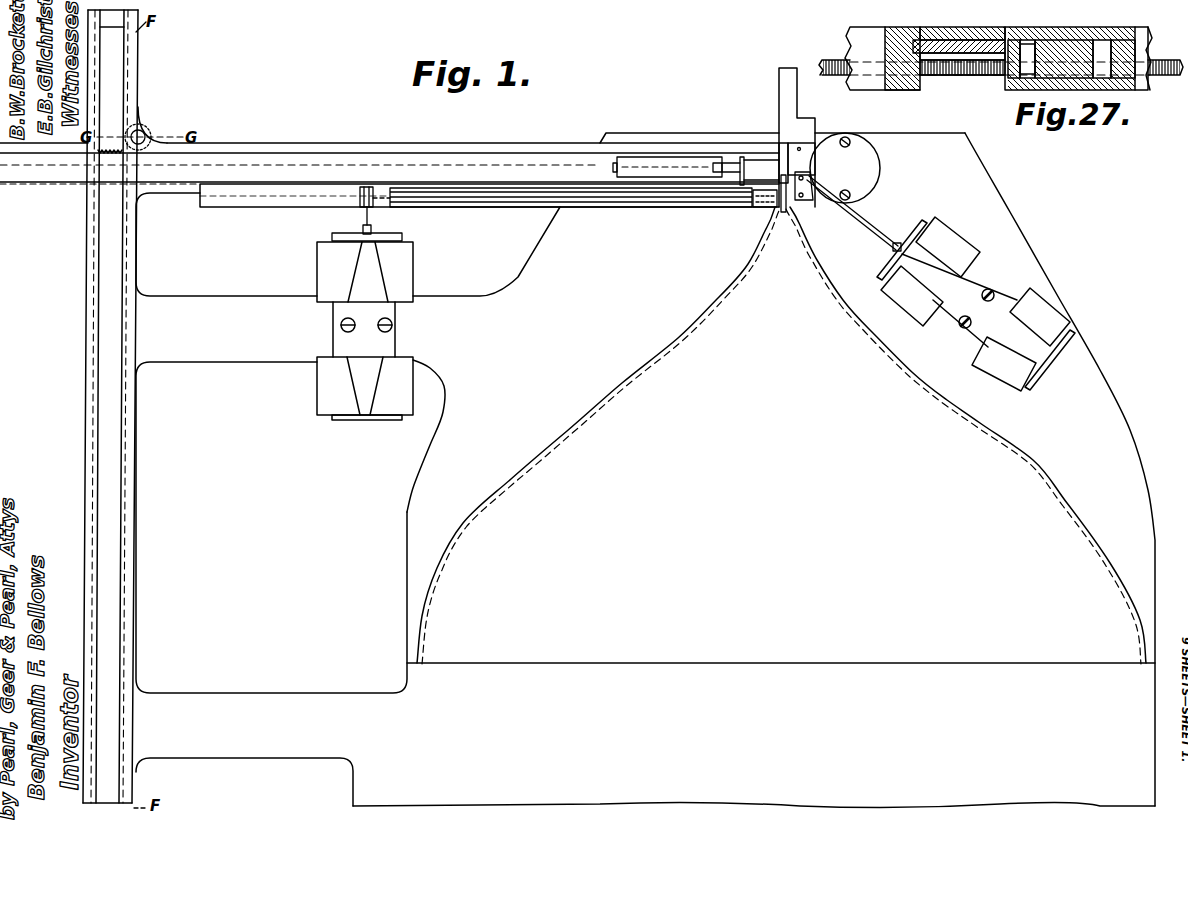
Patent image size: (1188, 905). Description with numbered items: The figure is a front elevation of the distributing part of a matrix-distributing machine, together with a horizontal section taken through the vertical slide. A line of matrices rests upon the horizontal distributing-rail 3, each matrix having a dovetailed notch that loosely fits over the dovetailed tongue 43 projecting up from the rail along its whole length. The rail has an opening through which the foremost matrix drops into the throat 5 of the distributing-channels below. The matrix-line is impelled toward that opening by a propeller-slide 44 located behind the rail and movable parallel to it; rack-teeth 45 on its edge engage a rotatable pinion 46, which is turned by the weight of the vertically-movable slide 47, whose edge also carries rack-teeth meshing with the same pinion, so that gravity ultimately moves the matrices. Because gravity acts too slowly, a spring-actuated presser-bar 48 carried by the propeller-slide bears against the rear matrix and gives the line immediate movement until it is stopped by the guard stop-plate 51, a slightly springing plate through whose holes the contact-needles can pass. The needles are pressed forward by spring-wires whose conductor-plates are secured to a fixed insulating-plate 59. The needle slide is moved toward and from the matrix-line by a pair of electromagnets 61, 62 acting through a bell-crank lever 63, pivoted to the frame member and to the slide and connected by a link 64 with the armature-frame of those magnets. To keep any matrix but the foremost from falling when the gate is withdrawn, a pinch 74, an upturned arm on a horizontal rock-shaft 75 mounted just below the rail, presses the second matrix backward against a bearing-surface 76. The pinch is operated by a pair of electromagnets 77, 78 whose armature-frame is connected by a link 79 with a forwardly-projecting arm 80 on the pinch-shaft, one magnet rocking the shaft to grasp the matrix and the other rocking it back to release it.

In FIG. 1, the distributing-rail 3 is at (565, 186).
In FIG. 1, the throat 5 is at (786, 201).
In FIG. 1, the dovetailed tongue 43 is at (481, 187).
In FIG. 1, the propeller-slide 44 is at (300, 167).
In FIG. 27, the propeller-slide 44 is at (965, 77).
In FIG. 27, the rack-teeth 45 is at (975, 78).
In FIG. 1, the pinion 46 is at (148, 126).
In FIG. 27, the pinion 46 is at (1002, 78).
In FIG. 1, the vertically-movable slide 47 is at (125, 406).
In FIG. 27, the vertically-movable slide 47 is at (965, 40).
In FIG. 1, the spring-actuated presser-bar 48 is at (741, 188).
In FIG. 1, the guard stop-plate 51 is at (790, 160).
In FIG. 1, the insulating-plate 59 is at (879, 181).
In FIG. 1, the electromagnet 61 is at (913, 308).
In FIG. 1, the electromagnet 62 is at (1023, 339).
In FIG. 1, the bell-crank lever 63 is at (806, 196).
In FIG. 1, the link 64 is at (874, 231).
In FIG. 1, the pinch 74 is at (765, 207).
In FIG. 1, the rock-shaft 75 is at (626, 208).
In FIG. 1, the bearing-surface 76 is at (782, 155).
In FIG. 1, the electromagnet 77 is at (365, 299).
In FIG. 1, the electromagnet 78 is at (365, 388).
In FIG. 1, the link 79 is at (372, 216).
In FIG. 1, the forwardly-projecting arm 80 is at (358, 208).